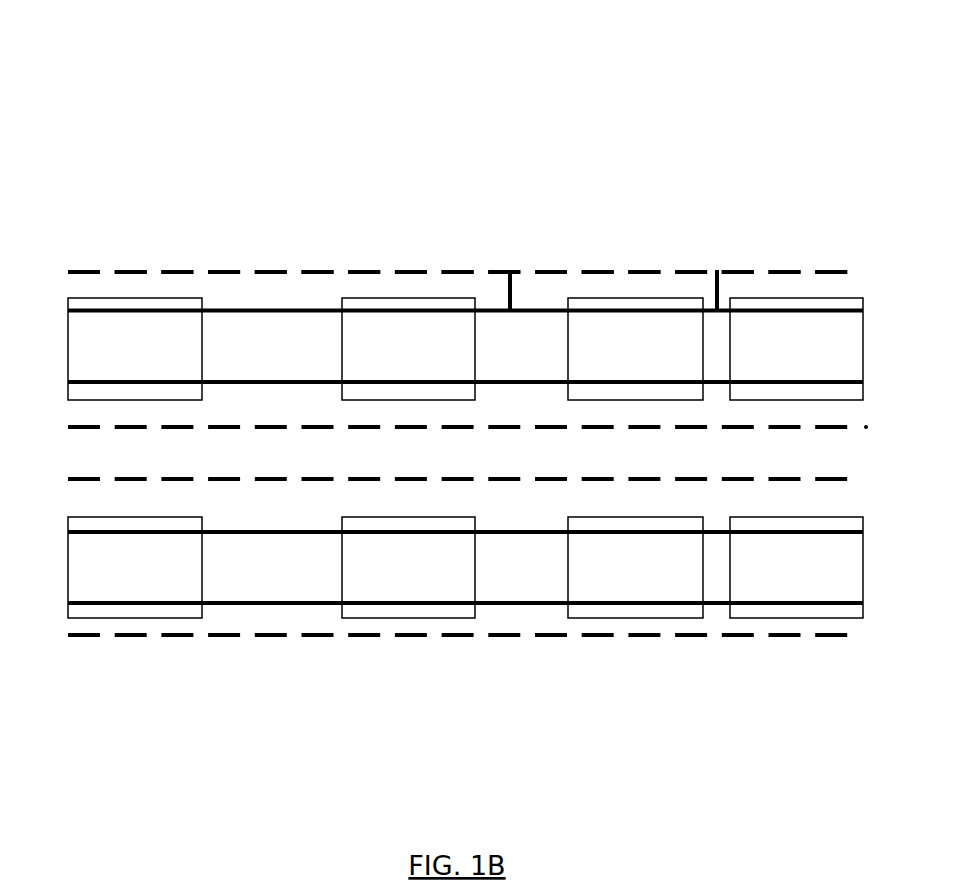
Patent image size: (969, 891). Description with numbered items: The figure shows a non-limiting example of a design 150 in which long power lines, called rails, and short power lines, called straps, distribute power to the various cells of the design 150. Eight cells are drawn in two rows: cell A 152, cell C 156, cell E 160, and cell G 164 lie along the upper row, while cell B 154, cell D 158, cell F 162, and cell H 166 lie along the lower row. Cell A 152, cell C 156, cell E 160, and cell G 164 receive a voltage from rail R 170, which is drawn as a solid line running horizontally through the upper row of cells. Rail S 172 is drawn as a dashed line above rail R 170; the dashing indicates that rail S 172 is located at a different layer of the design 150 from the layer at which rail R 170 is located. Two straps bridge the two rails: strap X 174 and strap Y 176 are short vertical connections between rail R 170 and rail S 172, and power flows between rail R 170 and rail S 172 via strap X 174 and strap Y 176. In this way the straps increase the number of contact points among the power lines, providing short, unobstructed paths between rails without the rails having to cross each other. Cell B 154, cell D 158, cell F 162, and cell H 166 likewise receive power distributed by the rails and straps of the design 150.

The design 150 is at (152, 112).
The cell A 152 is at (135, 349).
The cell B 154 is at (135, 567).
The cell C 156 is at (408, 349).
The cell D 158 is at (408, 567).
The cell E 160 is at (635, 349).
The cell F 162 is at (635, 567).
The cell G 164 is at (796, 349).
The cell H 166 is at (796, 567).
The rail R 170 is at (232, 310).
The rail S 172 is at (313, 272).
The strap X 174 is at (510, 288).
The strap Y 176 is at (717, 288).